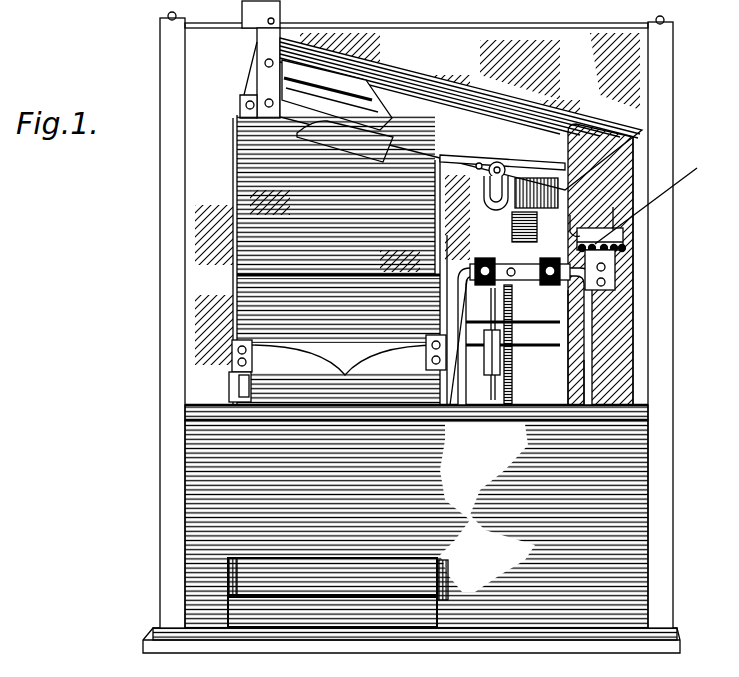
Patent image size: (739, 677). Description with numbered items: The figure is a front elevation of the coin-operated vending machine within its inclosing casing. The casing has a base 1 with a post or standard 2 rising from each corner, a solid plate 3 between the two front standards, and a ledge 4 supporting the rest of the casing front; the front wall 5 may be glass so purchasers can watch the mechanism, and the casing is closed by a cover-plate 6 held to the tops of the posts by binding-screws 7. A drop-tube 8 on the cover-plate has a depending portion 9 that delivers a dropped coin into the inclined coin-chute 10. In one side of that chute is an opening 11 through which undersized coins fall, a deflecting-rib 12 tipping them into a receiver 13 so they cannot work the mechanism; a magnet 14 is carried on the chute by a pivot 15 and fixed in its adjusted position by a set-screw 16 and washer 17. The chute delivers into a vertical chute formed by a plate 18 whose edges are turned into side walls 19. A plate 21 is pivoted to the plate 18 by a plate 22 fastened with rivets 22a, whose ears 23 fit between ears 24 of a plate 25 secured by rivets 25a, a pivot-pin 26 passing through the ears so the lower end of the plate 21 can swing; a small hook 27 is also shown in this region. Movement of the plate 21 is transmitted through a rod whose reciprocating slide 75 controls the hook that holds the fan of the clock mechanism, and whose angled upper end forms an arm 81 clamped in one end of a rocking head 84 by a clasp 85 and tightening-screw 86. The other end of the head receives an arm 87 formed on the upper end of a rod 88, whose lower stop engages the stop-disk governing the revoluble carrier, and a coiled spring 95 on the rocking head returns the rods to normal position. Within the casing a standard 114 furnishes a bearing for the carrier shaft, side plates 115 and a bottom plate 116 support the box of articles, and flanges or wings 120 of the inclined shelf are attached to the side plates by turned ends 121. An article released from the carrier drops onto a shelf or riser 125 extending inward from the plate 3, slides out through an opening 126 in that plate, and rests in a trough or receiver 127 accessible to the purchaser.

The base 1 is at (541, 648).
The post or standard 2 is at (409, 261).
The plate 3 is at (623, 505).
The ledge 4 is at (640, 418).
The front wall 5 is at (470, 79).
The cover-plate 6 is at (416, 16).
The binding-screws 7 is at (686, 20).
The drop-tube 8 is at (261, 14).
The depending portion 9 is at (260, 73).
The coin-chute 10 is at (461, 114).
The opening 11 is at (335, 72).
The deflecting-rib 12 is at (372, 106).
The receiver 13 is at (345, 141).
The magnet 14 is at (484, 185).
The pivot 15 is at (478, 163).
The set-screw 16 is at (496, 162).
The washer 17 is at (503, 167).
The plate 18 is at (600, 264).
The side walls 19 is at (510, 208).
The plate 21 is at (608, 352).
The plate 22 is at (612, 266).
The rivets 22a is at (615, 282).
The ears or eyes 23 is at (625, 242).
The ears 24 is at (630, 247).
The plate 25 is at (655, 198).
The rivets 25a is at (614, 207).
The pivot-pin 26 is at (640, 252).
The hook 27 is at (572, 216).
The sliding plate 75 is at (586, 372).
The arm 81 is at (558, 296).
The rocking head 84 is at (484, 258).
The clasp 85 is at (508, 268).
The tightening-screw 86 is at (466, 280).
The arm 87 is at (440, 265).
The rod 88 is at (465, 378).
The coiled spring 95 is at (512, 352).
The standard or upright 114 is at (229, 386).
The side plate 115 is at (240, 210).
The bottom plate 116 is at (338, 260).
The flanges or wings 120 is at (338, 341).
The turned ends 121 is at (428, 342).
The shelf or riser 125 is at (332, 576).
The opening 126 is at (446, 580).
The trough or receiver 127 is at (332, 612).